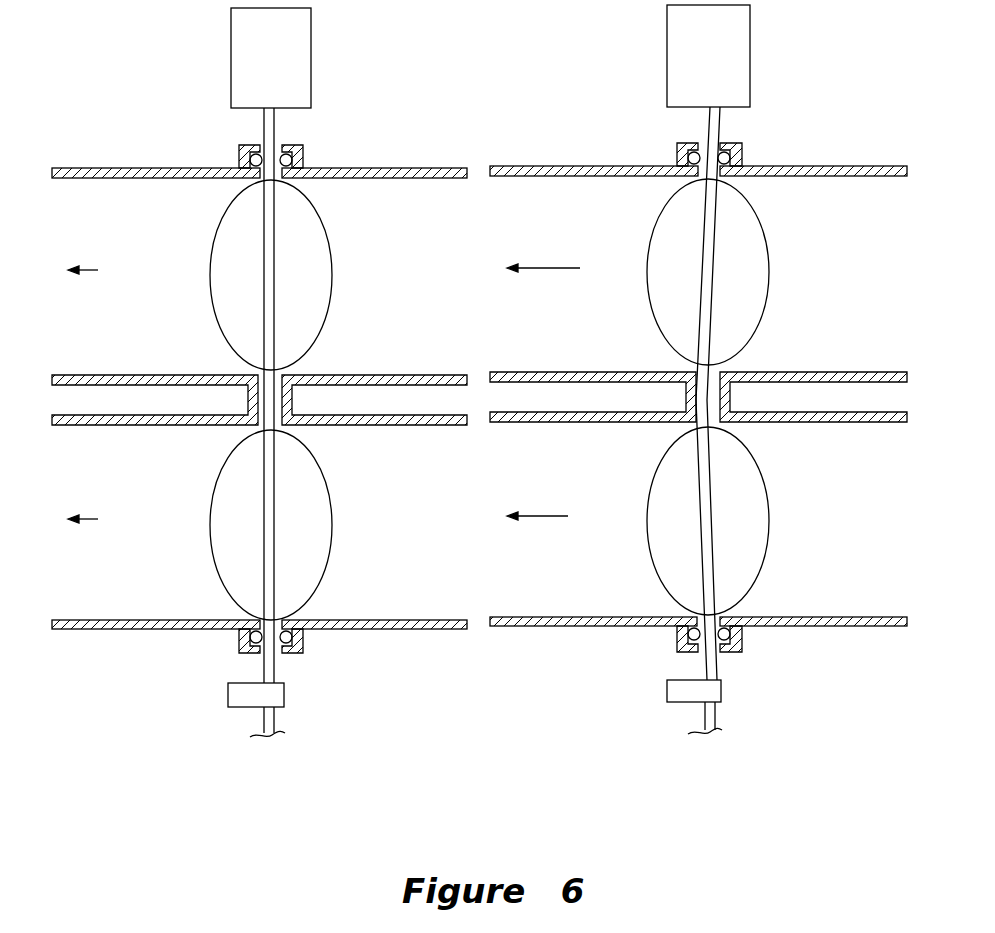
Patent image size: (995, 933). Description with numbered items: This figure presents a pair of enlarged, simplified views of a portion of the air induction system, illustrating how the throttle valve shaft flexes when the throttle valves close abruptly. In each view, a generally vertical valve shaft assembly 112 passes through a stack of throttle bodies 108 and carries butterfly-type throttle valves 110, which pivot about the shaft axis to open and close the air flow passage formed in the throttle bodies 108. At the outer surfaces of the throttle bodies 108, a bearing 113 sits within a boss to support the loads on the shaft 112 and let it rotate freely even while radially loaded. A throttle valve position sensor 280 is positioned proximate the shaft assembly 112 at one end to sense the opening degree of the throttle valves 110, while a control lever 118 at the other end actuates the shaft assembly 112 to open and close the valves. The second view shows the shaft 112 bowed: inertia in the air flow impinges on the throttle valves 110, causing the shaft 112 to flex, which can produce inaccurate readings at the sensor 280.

The throttle body 108 is at (133, 168).
The throttle valve 110 is at (332, 271).
The valve shaft assembly 112 is at (264, 276).
The bearing 113 is at (299, 159).
The control lever 118 is at (242, 698).
The throttle valve position sensor 280 is at (305, 43).